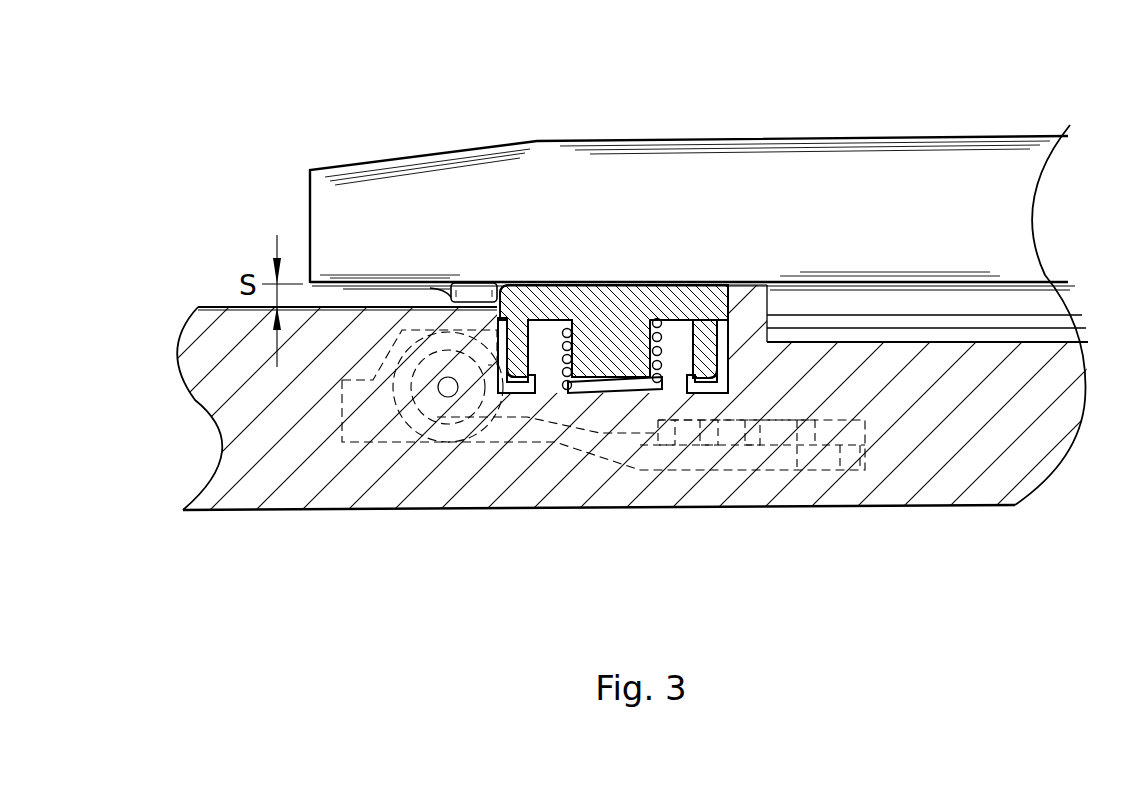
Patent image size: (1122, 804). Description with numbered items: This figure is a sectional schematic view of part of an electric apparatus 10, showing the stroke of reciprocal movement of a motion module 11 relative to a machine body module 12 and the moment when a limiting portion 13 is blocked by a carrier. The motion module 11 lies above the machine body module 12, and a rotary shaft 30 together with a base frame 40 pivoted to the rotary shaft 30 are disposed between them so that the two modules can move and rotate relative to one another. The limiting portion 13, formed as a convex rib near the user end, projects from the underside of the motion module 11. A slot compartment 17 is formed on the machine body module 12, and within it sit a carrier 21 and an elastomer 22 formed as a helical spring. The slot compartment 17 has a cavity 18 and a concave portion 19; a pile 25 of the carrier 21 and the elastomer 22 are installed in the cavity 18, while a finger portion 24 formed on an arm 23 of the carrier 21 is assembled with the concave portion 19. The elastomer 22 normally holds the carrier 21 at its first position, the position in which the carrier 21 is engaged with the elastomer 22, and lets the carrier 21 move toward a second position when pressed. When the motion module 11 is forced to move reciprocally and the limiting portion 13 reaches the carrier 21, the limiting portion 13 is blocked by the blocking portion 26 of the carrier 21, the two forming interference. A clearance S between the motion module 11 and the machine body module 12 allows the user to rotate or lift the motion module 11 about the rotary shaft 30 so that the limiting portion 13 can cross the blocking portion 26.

The electric apparatus 10 is at (313, 118).
The motion module 11 is at (503, 141).
The machine body module 12 is at (297, 492).
The limiting portion 13 is at (472, 293).
The slot compartment 17 is at (548, 325).
The cavity 18 is at (683, 388).
The concave portion 19 is at (545, 397).
The carrier 21 is at (688, 300).
The elastomer 22 is at (567, 392).
The arm 23 is at (706, 352).
The finger portion 24 is at (535, 395).
The pile 25 is at (613, 352).
The blocking portion 26 is at (520, 287).
The rotary shaft 30 is at (441, 462).
The base frame 40 is at (607, 512).